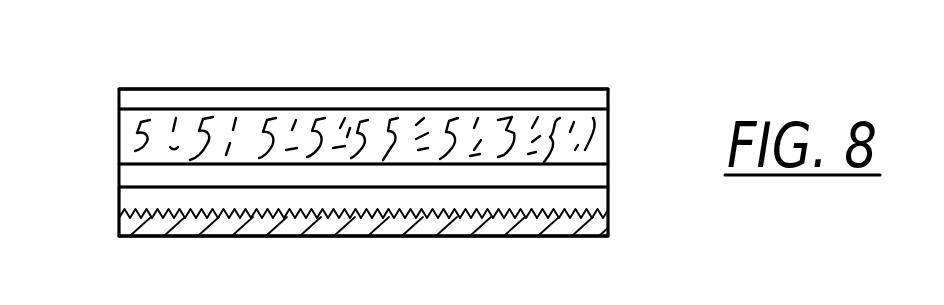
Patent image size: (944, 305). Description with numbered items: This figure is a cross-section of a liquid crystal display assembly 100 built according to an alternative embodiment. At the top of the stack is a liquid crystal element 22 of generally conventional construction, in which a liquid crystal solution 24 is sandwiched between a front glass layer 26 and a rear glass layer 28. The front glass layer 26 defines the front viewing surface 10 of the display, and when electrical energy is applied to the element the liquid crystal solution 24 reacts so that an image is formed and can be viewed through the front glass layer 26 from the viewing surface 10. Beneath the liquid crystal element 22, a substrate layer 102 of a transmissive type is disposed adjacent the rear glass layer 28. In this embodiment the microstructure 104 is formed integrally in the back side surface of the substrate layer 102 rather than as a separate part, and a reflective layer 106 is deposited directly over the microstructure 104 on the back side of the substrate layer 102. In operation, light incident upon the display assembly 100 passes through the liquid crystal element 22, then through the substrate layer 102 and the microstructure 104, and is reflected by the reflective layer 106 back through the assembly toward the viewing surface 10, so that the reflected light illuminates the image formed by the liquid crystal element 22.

The liquid crystal display assembly 100 is at (340, 21).
The front viewing surface 10 is at (224, 78).
The liquid crystal element 22 is at (611, 91).
The front glass layer 26 is at (120, 102).
The liquid crystal solution 24 is at (127, 139).
The rear glass layer 28 is at (125, 175).
The substrate layer 102 is at (130, 199).
The microstructure 104 is at (330, 219).
The reflective layer 106 is at (502, 228).